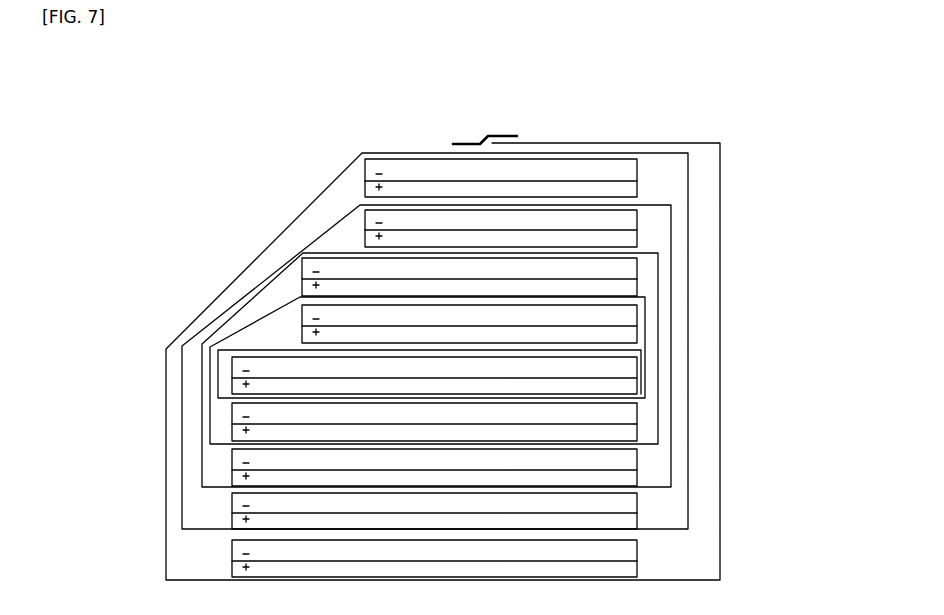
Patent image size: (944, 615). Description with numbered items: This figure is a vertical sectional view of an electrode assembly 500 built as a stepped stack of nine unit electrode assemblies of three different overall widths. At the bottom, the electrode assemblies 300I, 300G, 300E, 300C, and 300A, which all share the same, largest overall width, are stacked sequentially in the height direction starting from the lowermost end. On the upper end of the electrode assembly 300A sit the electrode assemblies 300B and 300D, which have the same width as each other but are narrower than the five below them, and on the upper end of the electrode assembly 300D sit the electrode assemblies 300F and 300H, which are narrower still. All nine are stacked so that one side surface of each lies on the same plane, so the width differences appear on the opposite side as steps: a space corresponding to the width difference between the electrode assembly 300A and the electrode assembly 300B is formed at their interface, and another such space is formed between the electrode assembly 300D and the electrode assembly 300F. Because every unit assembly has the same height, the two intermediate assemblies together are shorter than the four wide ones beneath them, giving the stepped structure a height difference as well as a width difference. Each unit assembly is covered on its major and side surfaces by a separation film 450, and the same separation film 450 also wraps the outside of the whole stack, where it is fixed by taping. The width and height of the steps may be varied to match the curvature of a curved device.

The electrode assembly 500 is at (94, 109).
The separation film 450 is at (166, 364).
The electrode assembly 300A is at (605, 369).
The electrode assembly 300B is at (605, 317).
The electrode assembly 300C is at (605, 418).
The electrode assembly 300D is at (605, 272).
The electrode assembly 300E is at (612, 462).
The electrode assembly 300F is at (622, 218).
The electrode assembly 300G is at (613, 504).
The electrode assembly 300H is at (612, 174).
The electrode assembly 300I is at (620, 553).